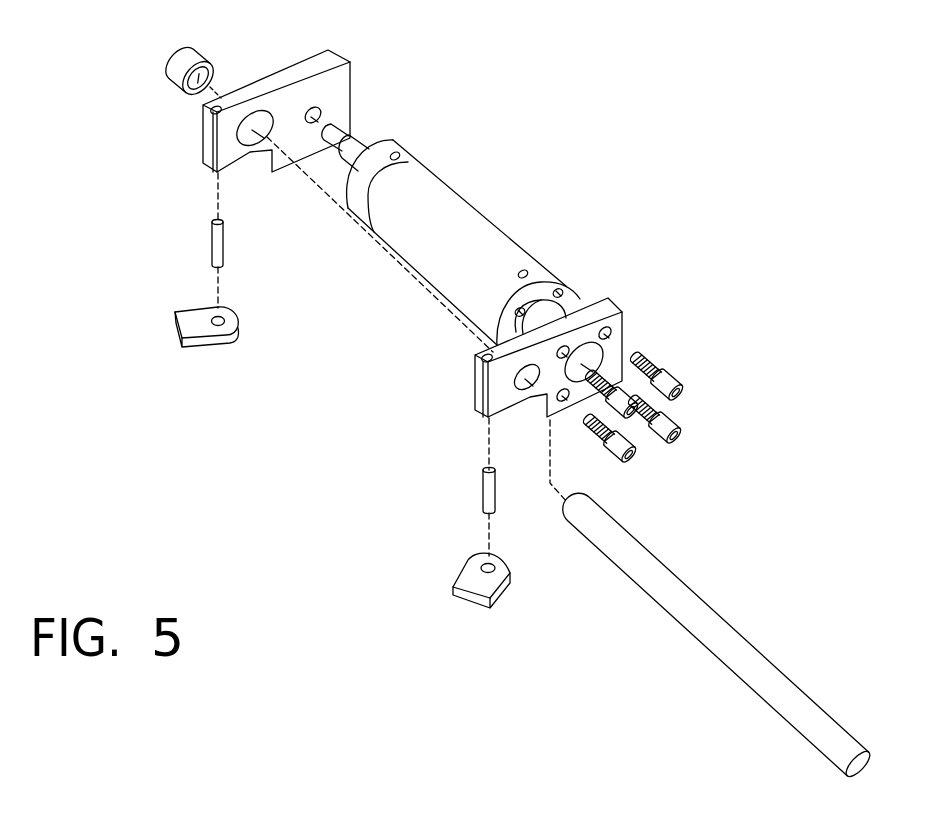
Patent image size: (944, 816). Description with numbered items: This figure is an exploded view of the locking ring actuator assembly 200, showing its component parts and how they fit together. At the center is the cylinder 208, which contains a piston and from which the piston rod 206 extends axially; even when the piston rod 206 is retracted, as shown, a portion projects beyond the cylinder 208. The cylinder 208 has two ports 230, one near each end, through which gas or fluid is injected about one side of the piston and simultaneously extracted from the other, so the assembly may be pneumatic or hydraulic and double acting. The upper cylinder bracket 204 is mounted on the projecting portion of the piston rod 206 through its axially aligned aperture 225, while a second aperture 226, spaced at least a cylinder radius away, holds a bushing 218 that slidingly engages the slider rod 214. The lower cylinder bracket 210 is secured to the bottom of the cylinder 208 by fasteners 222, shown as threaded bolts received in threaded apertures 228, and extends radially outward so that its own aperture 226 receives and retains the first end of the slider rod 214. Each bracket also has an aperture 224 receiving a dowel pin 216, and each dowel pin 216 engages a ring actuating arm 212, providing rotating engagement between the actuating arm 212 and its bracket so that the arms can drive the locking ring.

The locking ring actuator assembly 200 is at (760, 174).
The upper cylinder bracket 204 is at (207, 141).
The piston rod 206 is at (350, 135).
The cylinder 208 is at (478, 230).
The lower cylinder bracket 210 is at (624, 307).
The ring actuating arm 212 is at (192, 317).
The slider rod 214 is at (755, 660).
The dowel pin 216 is at (221, 240).
The bushing 218 is at (176, 60).
The fasteners 222 is at (700, 413).
The aperture 224 is at (211, 107).
The aperture 225 is at (321, 112).
The aperture 226 is at (262, 127).
The threaded apertures 228 is at (558, 292).
The ports 230 is at (395, 154).